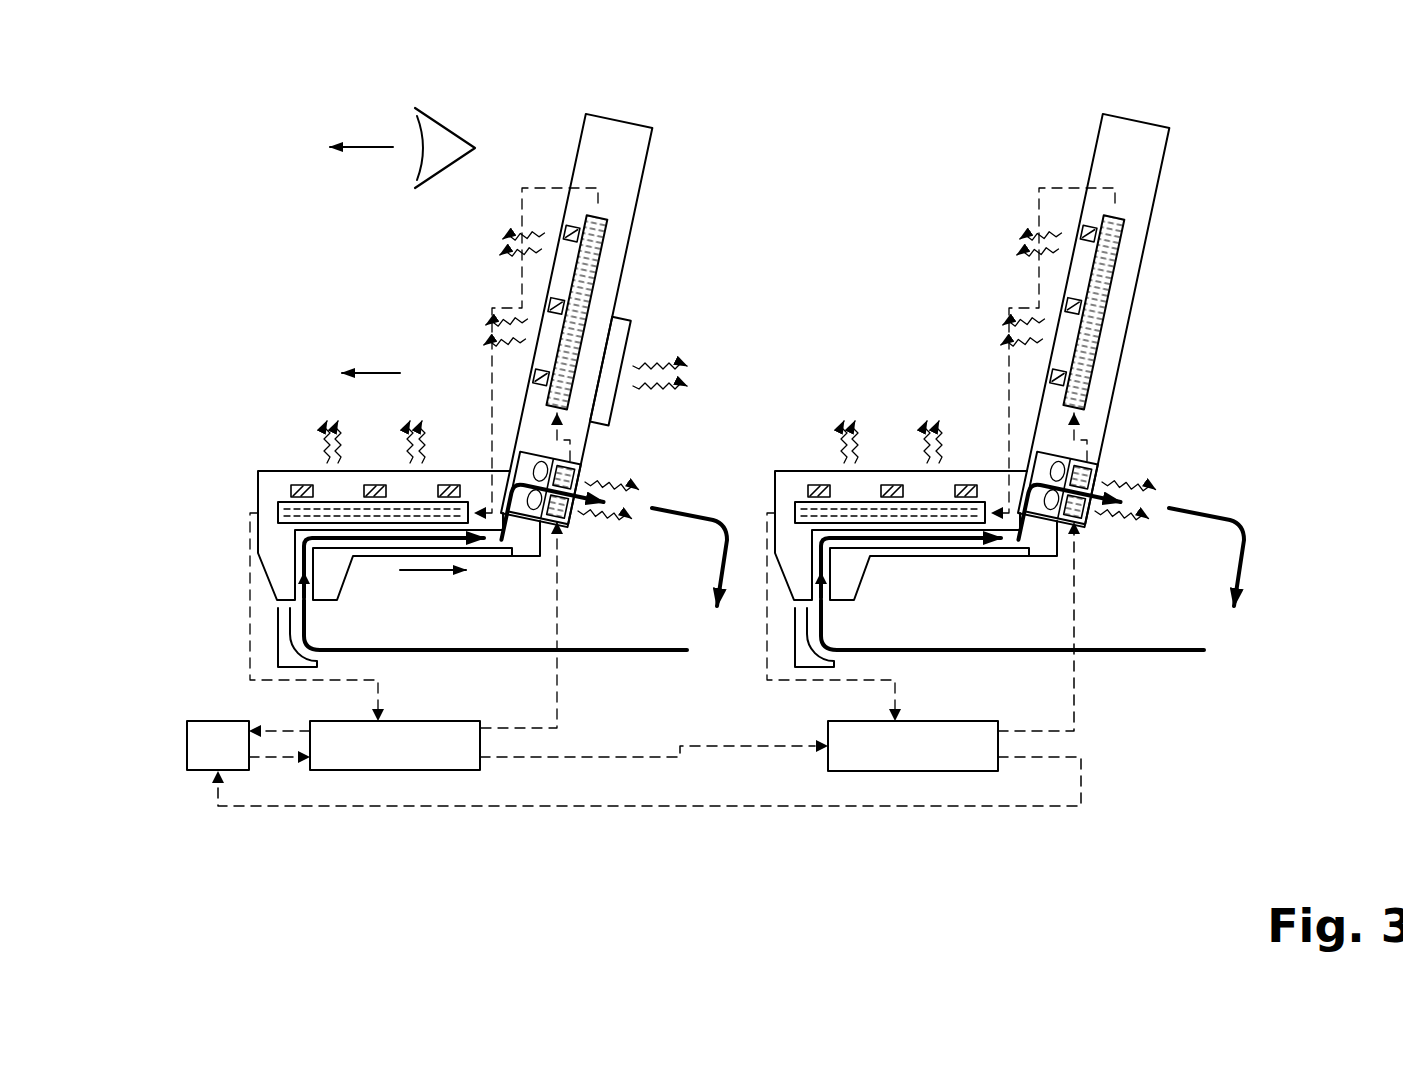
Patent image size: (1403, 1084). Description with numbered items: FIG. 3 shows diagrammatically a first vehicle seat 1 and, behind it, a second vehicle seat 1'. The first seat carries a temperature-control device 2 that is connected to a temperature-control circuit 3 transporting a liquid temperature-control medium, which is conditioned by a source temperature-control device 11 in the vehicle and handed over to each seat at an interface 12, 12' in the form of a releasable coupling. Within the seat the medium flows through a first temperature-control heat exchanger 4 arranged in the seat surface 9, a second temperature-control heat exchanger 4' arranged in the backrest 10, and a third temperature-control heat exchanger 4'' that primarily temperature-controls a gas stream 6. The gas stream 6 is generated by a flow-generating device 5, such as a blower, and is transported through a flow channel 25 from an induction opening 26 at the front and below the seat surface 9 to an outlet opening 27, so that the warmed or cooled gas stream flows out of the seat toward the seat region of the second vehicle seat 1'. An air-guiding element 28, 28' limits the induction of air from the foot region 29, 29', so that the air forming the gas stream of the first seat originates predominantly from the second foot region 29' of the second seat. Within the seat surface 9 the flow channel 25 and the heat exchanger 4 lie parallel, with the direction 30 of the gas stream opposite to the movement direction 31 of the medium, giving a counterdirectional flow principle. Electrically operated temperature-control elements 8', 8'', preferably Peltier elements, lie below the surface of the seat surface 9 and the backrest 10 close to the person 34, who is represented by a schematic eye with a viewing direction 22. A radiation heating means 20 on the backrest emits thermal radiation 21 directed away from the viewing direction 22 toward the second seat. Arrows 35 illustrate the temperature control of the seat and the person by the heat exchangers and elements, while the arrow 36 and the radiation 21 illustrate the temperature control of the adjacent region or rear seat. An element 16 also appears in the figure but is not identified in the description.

The vehicle seat 1 is at (141, 164).
The second vehicle seat 1' is at (806, 164).
The temperature-control device 2 is at (190, 333).
The temperature-control circuit 3 is at (188, 412).
The first temperature-control heat exchanger 4 is at (329, 525).
The second temperature-control heat exchanger 4' is at (608, 312).
The third temperature-control heat exchanger 4'' is at (652, 488).
The flow-generating device 5 is at (547, 453).
The gas stream 6 is at (518, 546).
The temperature-control element 8' is at (375, 443).
The temperature-control element 8'' is at (501, 305).
The seat surface 9 is at (278, 482).
The backrest 10 is at (622, 196).
The source temperature-control device 11 is at (187, 748).
The interface 12 is at (646, 687).
The interface 12' is at (913, 787).
The signal line 16 is at (560, 694).
The radiation heating means 20 is at (630, 340).
The thermal radiation 21 is at (690, 373).
The viewing direction 22 is at (362, 146).
The flow channel 25 is at (295, 575).
The induction opening 26 is at (322, 614).
The outlet opening 27 is at (575, 522).
The air-guiding element 28 is at (244, 637).
The air-guiding element 28' is at (772, 637).
The foot region 29 is at (404, 607).
The second foot region 29' is at (689, 557).
The direction 30 is at (428, 577).
The movement direction 31 is at (378, 372).
The person 34 is at (452, 123).
The arrows 35 is at (500, 227).
The arrow 36 is at (607, 522).